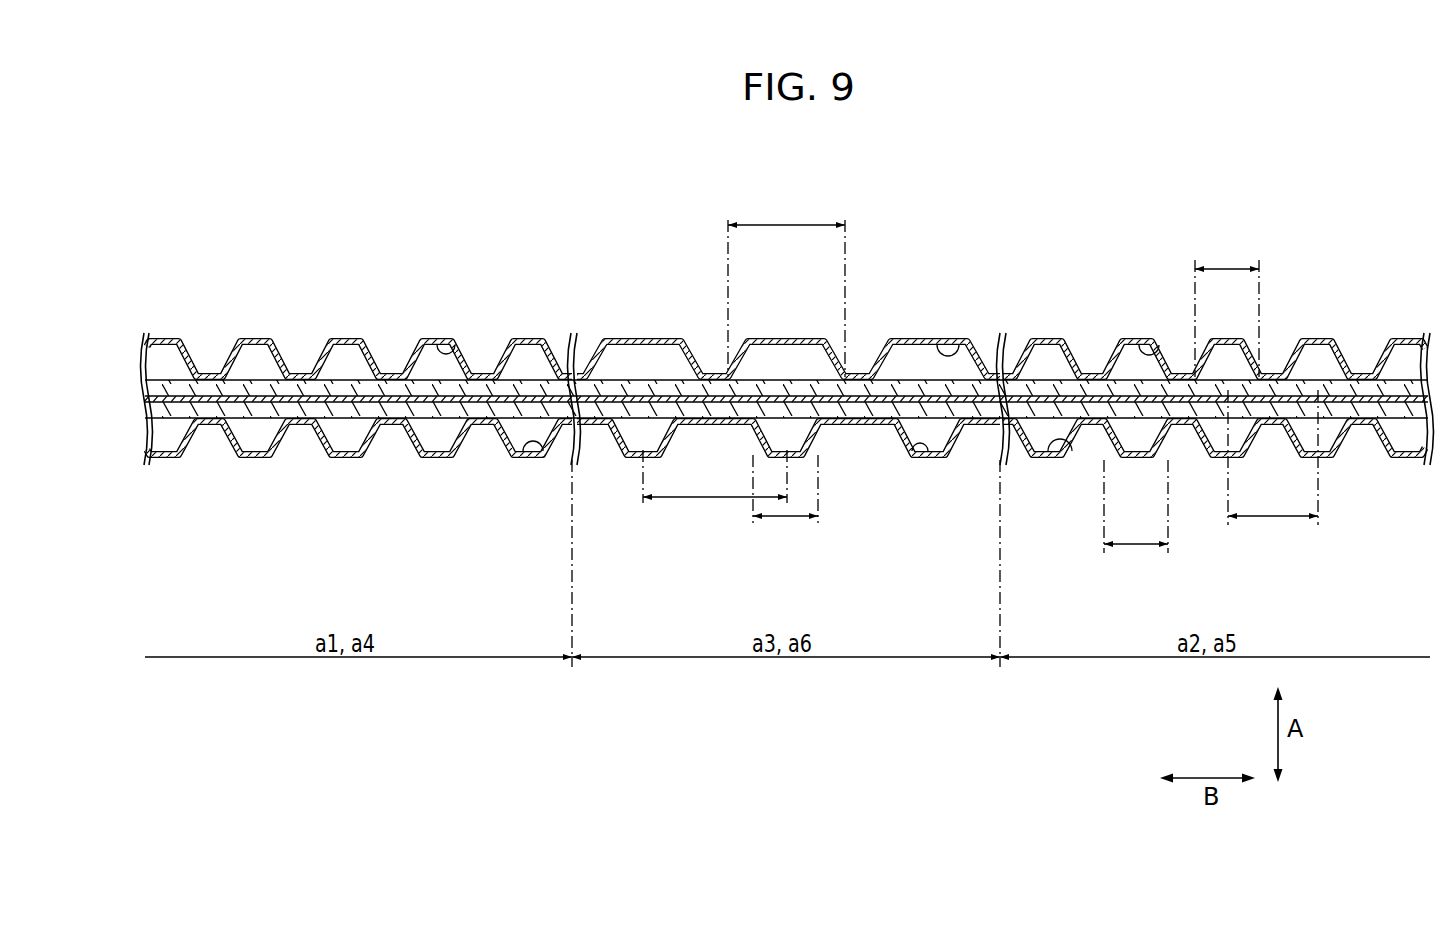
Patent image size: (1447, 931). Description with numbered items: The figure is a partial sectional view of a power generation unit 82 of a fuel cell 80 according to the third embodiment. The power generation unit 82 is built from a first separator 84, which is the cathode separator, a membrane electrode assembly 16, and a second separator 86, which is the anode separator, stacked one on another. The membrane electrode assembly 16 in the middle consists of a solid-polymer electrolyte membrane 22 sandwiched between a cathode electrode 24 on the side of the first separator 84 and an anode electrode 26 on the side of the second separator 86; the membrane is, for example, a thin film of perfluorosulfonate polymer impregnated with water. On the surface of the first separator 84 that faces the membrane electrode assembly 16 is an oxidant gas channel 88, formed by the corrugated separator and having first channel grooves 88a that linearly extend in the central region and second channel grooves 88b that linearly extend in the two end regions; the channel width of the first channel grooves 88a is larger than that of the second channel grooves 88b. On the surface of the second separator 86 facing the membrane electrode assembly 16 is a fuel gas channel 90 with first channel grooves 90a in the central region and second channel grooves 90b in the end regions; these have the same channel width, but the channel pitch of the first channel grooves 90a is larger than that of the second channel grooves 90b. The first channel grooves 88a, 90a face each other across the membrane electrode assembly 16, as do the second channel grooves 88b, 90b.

The fuel cell 80 is at (835, 148).
The power generation unit 82 is at (796, 148).
The membrane electrode assembly 16 is at (786, 479).
The solid-polymer electrolyte membrane 22 is at (283, 398).
The cathode electrode 24 is at (325, 388).
The anode electrode 26 is at (241, 410).
The first separator 84 is at (372, 374).
The second separator 86 is at (216, 457).
The oxidant gas channel 88 is at (928, 373).
The first channel grooves 88a is at (961, 345).
The second channel grooves 88b is at (456, 346).
The fuel gas channel 90 is at (932, 425).
The first channel grooves 90a is at (912, 451).
The second channel grooves 90b is at (543, 452).